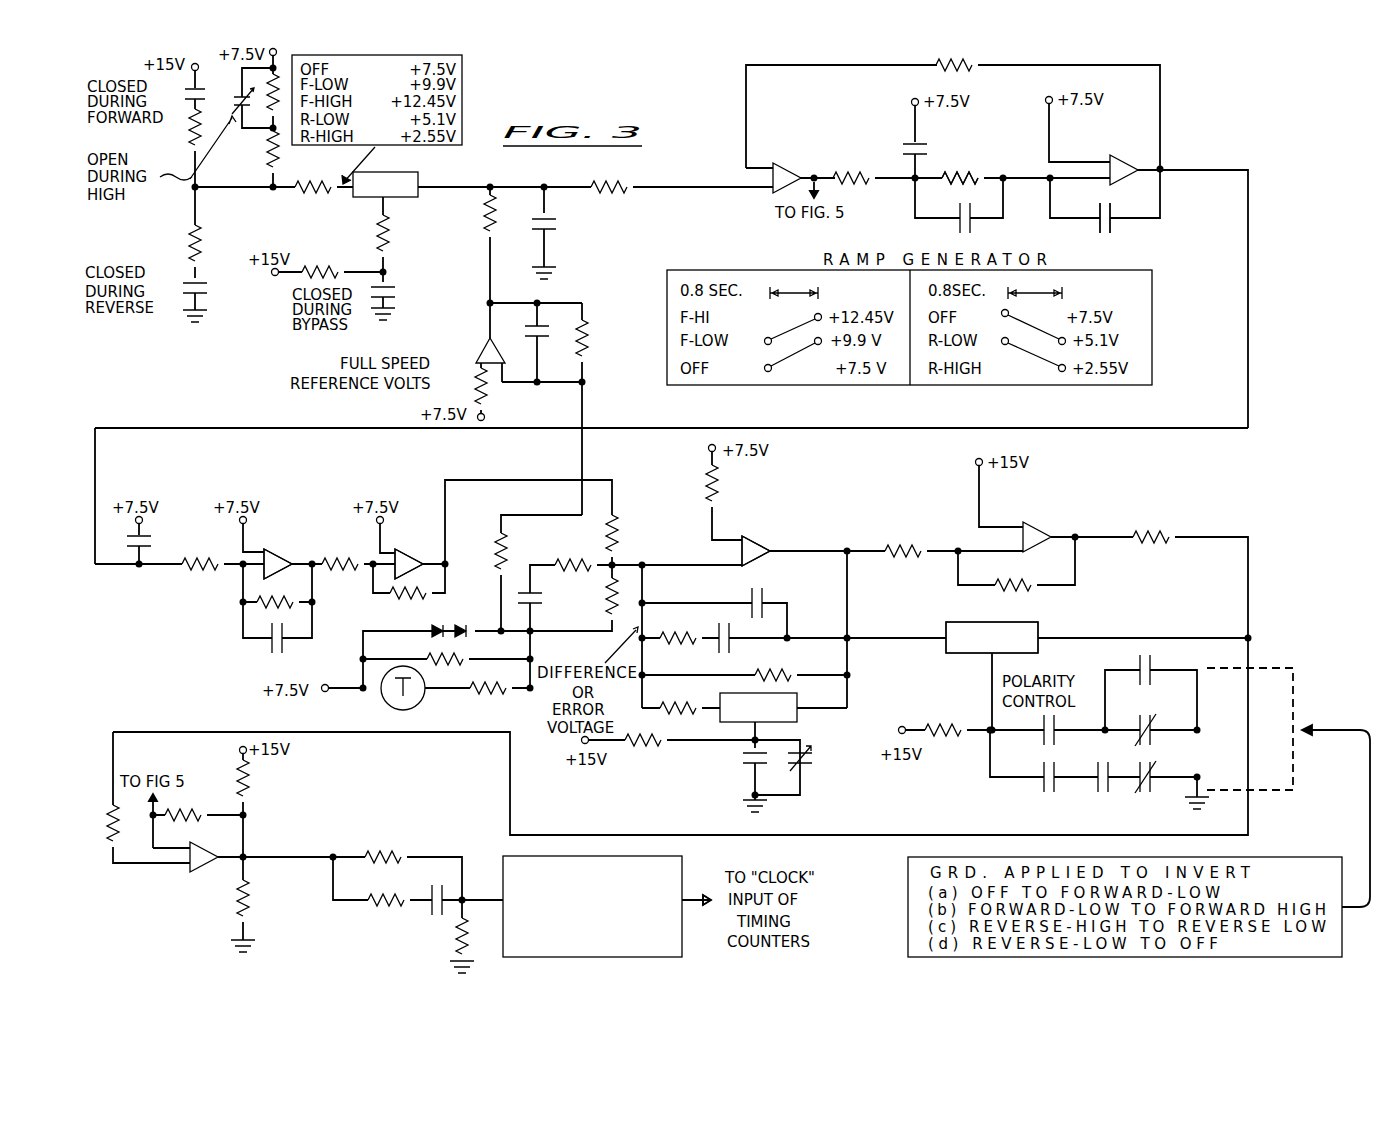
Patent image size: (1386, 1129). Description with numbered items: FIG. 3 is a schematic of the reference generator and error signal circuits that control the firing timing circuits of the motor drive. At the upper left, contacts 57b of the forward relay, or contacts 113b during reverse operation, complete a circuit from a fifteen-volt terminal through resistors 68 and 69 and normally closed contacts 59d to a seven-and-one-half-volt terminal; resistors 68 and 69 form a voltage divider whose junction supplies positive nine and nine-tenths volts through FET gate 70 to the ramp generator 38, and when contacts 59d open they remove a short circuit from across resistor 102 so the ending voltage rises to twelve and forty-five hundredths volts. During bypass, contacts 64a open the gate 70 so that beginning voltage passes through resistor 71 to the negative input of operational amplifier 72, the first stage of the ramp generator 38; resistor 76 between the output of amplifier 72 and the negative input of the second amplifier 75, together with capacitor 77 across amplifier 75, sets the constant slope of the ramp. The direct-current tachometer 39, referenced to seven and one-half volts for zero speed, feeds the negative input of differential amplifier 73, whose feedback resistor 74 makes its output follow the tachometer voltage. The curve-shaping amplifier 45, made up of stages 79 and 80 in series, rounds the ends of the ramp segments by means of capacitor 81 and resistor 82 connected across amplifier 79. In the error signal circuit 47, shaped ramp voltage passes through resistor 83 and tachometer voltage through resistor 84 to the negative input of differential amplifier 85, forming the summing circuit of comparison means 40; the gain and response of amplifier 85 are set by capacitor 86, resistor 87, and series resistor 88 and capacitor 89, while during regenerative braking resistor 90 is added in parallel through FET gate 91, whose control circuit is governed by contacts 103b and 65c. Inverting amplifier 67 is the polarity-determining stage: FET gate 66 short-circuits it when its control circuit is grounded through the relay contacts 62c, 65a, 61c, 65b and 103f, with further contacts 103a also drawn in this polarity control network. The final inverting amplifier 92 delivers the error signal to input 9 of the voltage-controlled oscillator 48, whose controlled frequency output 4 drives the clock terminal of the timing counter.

The contacts 57b is at (189, 88).
The normally closed contacts 59d is at (227, 100).
The resistor 68 is at (188, 134).
The resistor 69 is at (267, 152).
The resistor 102 is at (268, 118).
The FET gate 70 is at (416, 177).
The resistor 71 is at (484, 224).
The operational amplifier 73 is at (482, 352).
The resistor 74 is at (590, 353).
The contacts 64a is at (393, 289).
The contacts 113b is at (205, 286).
The operational amplifier 72 is at (781, 174).
The ramp generator 38 is at (988, 146).
The resistor 76 is at (964, 178).
The second amplifier 75 is at (1114, 158).
The capacitor 77 is at (1110, 227).
The curve-shaping amplifier 45 is at (309, 495).
The amplifier stage 79 is at (270, 558).
The amplifier stage 80 is at (405, 556).
The resistor 82 is at (269, 601).
The capacitor 81 is at (272, 650).
The direct-current tachometer 39 is at (383, 697).
The resistor 83 is at (606, 542).
The resistor 84 is at (609, 606).
The comparison means 40 is at (663, 553).
The differential amplifier 85 is at (752, 545).
The capacitor 86 is at (762, 597).
The resistor 88 is at (689, 644).
The capacitor 89 is at (727, 653).
The resistor 87 is at (795, 675).
The resistor 90 is at (689, 698).
The FET gate 91 is at (797, 701).
The contacts 103b is at (743, 757).
The normally closed contacts 65c is at (805, 762).
The inverting amplifier 67 is at (1027, 530).
The error signal circuit 47 is at (904, 616).
The field-effect-transistor gate 66 is at (1029, 622).
The switch 103a is at (1148, 668).
The contacts 62c is at (1028, 728).
The normally closed contacts 65a is at (1149, 745).
The contacts 61c is at (1041, 790).
The contacts 65b is at (1108, 788).
The contacts 103f is at (1140, 780).
The final inverting amplifier 92 is at (200, 850).
The input 9 is at (482, 890).
The voltage-controlled oscillator 48 is at (673, 859).
The controlled frequency output 4 is at (696, 892).